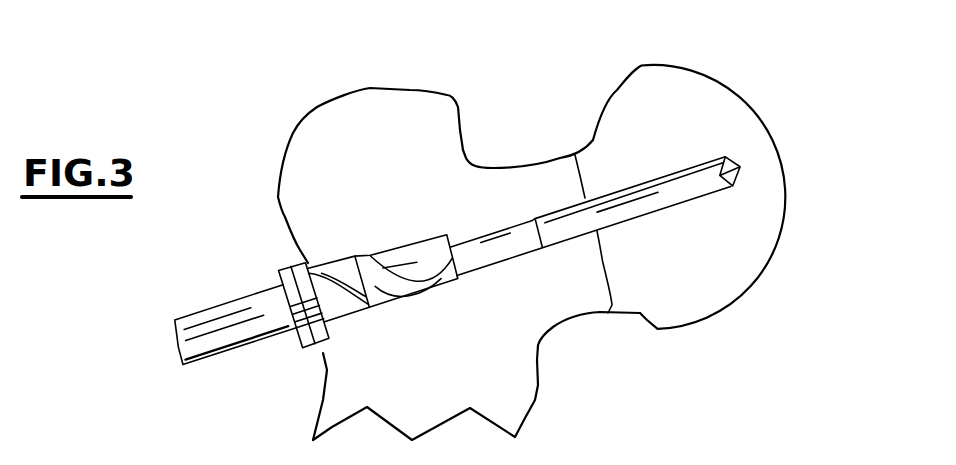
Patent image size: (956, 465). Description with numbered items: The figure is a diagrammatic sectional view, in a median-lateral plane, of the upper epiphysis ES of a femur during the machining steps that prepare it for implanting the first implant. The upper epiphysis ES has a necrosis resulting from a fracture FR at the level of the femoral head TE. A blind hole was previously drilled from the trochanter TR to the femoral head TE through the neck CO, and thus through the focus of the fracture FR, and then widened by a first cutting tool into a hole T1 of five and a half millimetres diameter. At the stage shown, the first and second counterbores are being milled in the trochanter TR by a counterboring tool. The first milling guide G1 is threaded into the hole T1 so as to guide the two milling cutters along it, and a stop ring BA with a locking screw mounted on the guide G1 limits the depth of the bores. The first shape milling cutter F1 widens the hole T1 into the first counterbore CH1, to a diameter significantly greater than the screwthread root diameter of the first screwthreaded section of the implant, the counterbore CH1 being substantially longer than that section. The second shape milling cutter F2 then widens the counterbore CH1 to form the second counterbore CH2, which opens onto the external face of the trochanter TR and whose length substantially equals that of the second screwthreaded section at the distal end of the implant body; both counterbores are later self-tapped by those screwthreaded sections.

The upper epiphysis ES is at (565, 69).
The femoral head TE is at (737, 253).
The neck CO is at (532, 173).
The trochanter TR is at (328, 130).
The fracture FR is at (605, 318).
The first shape milling cutter F1 is at (385, 262).
The second shape milling cutter F2 is at (332, 280).
The first counterbore CH1 is at (432, 298).
The second counterbore CH2 is at (352, 316).
The first guide G1 is at (485, 240).
The hole T1 is at (730, 167).
The stop ring BA is at (308, 270).